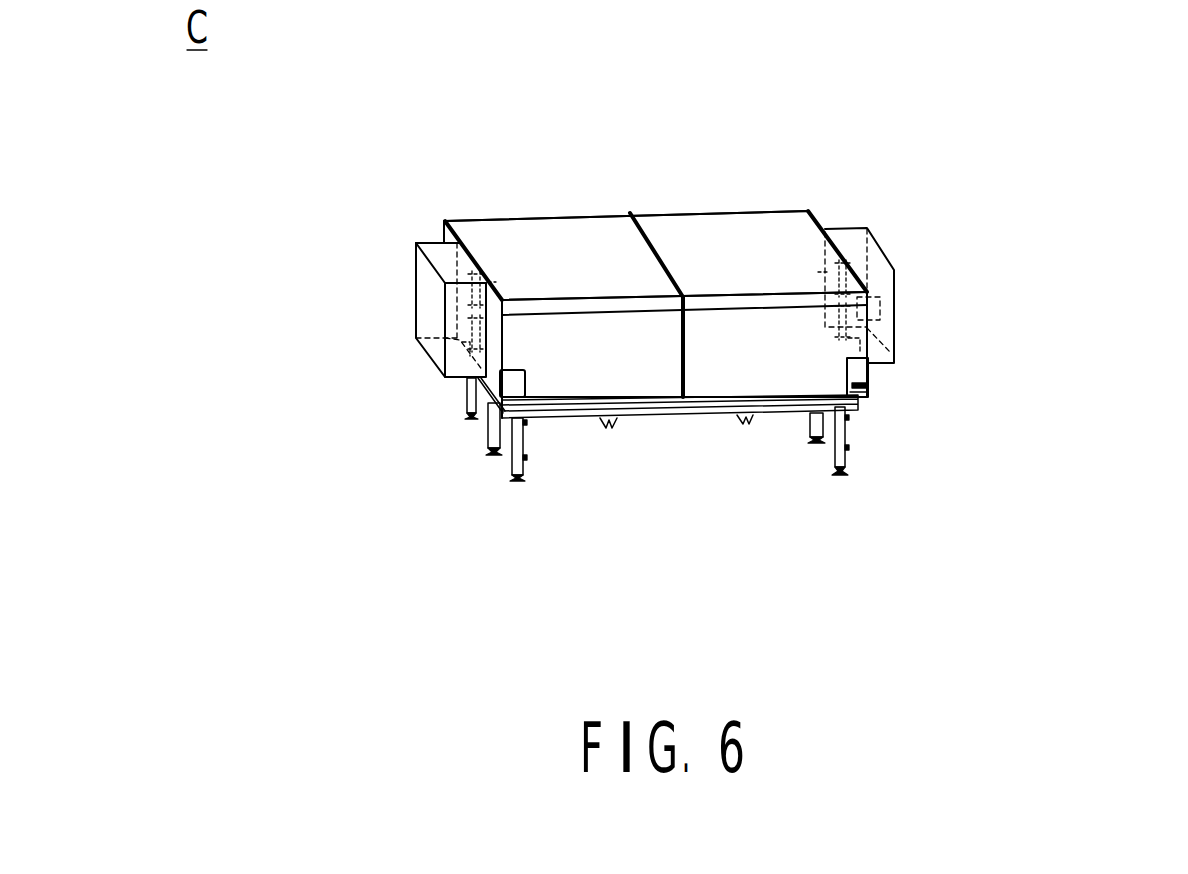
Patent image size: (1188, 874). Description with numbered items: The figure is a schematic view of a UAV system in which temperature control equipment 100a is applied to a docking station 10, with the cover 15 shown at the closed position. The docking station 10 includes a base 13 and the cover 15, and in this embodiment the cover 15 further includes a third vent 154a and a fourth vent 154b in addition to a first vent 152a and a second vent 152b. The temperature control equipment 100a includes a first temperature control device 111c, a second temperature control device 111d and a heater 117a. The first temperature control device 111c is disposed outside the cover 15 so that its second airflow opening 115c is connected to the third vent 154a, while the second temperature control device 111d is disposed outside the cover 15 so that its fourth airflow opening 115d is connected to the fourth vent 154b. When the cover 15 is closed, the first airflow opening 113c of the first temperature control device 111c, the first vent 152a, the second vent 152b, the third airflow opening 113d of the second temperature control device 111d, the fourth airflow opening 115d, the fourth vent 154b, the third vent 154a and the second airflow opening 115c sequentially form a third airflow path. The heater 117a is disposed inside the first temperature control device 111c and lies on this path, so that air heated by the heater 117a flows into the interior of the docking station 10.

The docking station 10 is at (656, 314).
The base 13 is at (685, 400).
The cover 15 is at (574, 247).
The temperature control equipment 100a is at (652, 302).
The first temperature control device 111c is at (888, 258).
The second temperature control device 111d is at (426, 281).
The first airflow opening 113c is at (870, 357).
The third airflow opening 113d is at (445, 367).
The second airflow opening 115c is at (841, 258).
The fourth airflow opening 115d is at (457, 240).
The heater 117a is at (878, 305).
The first vent 152a is at (845, 328).
The second vent 152b is at (493, 372).
The third vent 154a is at (825, 272).
The fourth vent 154b is at (490, 283).